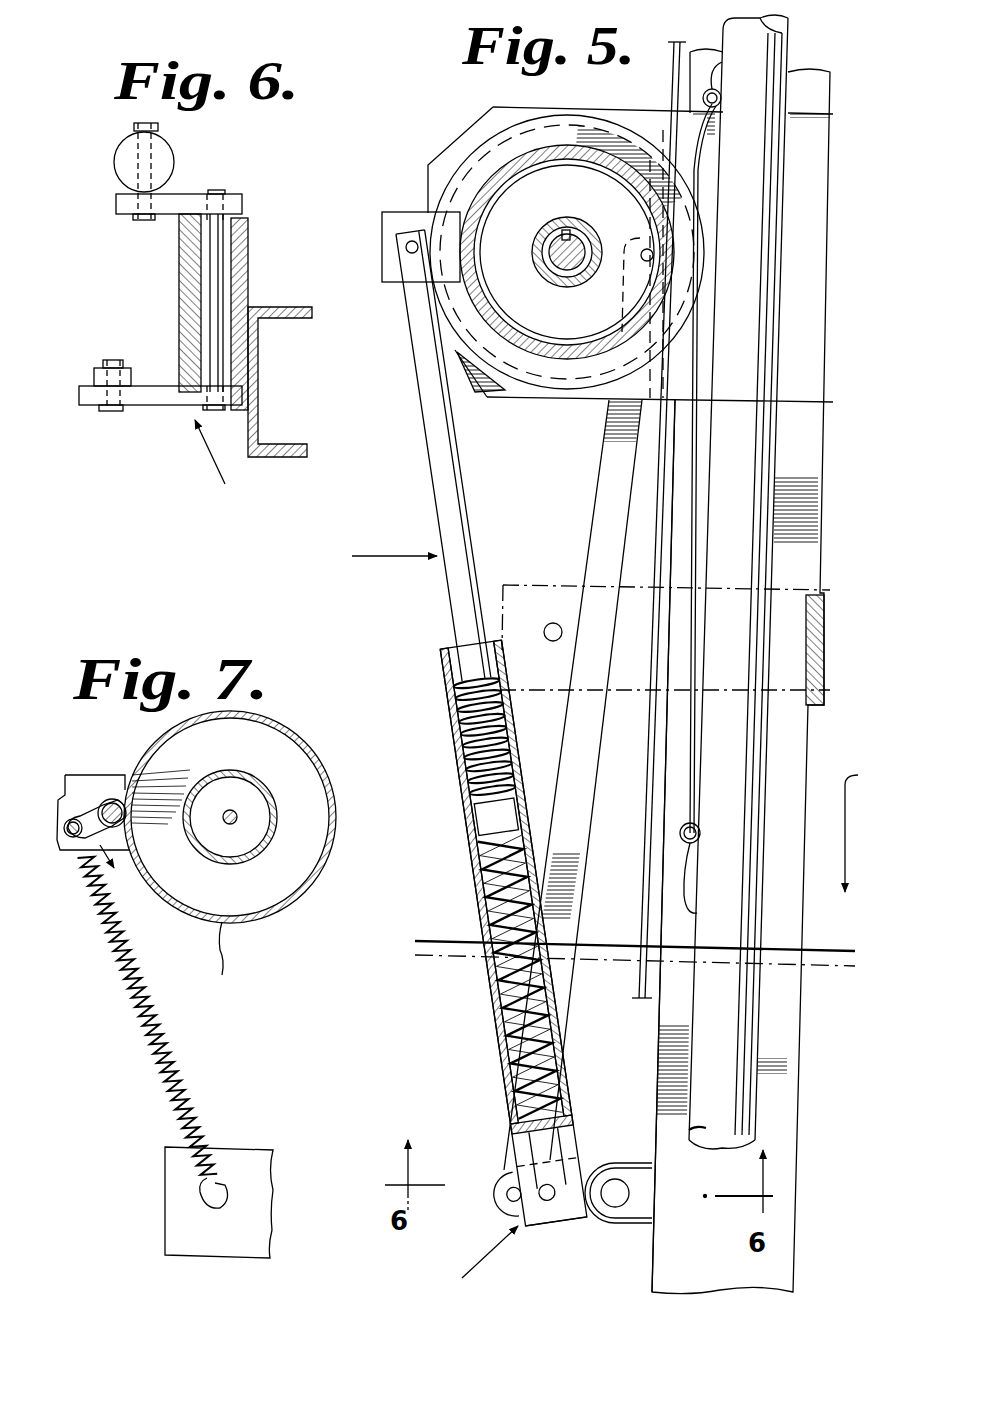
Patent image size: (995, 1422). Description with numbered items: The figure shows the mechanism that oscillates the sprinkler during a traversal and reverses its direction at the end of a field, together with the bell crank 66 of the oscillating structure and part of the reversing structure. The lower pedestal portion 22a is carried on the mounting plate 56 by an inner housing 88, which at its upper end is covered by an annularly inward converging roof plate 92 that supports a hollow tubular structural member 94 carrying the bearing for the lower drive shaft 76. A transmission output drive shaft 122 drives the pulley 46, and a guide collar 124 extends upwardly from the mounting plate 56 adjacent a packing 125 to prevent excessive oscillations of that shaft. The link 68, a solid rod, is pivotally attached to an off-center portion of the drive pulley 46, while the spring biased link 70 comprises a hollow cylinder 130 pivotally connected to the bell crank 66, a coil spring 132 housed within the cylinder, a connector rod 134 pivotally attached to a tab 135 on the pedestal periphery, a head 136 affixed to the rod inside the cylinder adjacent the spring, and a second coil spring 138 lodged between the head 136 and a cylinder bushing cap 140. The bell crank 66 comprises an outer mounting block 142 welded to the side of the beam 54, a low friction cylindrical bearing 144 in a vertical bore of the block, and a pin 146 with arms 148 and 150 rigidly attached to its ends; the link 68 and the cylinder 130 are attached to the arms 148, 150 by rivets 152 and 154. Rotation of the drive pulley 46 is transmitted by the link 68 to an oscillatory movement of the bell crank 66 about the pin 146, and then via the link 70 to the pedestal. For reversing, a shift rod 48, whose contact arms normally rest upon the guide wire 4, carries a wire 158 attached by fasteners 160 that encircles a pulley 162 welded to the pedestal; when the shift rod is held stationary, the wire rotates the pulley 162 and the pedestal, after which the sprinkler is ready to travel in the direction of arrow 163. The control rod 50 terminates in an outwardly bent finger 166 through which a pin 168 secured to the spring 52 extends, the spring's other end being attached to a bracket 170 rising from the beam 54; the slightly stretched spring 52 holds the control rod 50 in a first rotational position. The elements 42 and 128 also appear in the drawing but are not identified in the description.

In FIG. 5, the guide wire 4 is at (672, 58).
In FIG. 5, the lower pedestal portion 22a is at (482, 195).
In FIG. 7, the lower pedestal portion 22a is at (216, 960).
In FIG. 7, the drum 42 is at (192, 876).
In FIG. 5, the drive pulley 46 is at (568, 150).
In FIG. 5, the shift rod 48 is at (752, 553).
In FIG. 7, the control rod 50 is at (111, 800).
In FIG. 7, the spring 52 is at (160, 1090).
In FIG. 5, the beam 54 is at (782, 1100).
In FIG. 6, the beam 54 is at (277, 307).
In FIG. 5, the mounting plate 56 is at (492, 398).
In FIG. 5, the bell crank 66 is at (476, 1262).
In FIG. 6, the bell crank 66 is at (210, 463).
In FIG. 5, the link 68 is at (578, 796).
In FIG. 6, the link 68 is at (94, 376).
In FIG. 5, the spring biased link 70 is at (378, 556).
In FIG. 7, the lower drive shaft 76 is at (233, 810).
In FIG. 5, the inner housing 88 is at (564, 166).
In FIG. 7, the roof plate 92 is at (297, 783).
In FIG. 7, the hollow tubular structural member 94 is at (250, 862).
In FIG. 5, the transmission output drive shaft 122 is at (545, 235).
In FIG. 5, the guide collar 124 is at (552, 270).
In FIG. 5, the packing 125 is at (568, 276).
In FIG. 5, the pivot pin 128 is at (408, 255).
In FIG. 5, the hollow cylinder 130 is at (461, 940).
In FIG. 6, the hollow cylinder 130 is at (171, 162).
In FIG. 5, the coil spring 132 is at (481, 982).
In FIG. 5, the connector rod 134 is at (438, 715).
In FIG. 5, the tab 135 is at (393, 225).
In FIG. 7, the tab 135 is at (128, 790).
In FIG. 5, the head 136 is at (454, 820).
In FIG. 5, the second coil spring 138 is at (446, 742).
In FIG. 5, the cylinder bushing cap 140 is at (432, 629).
In FIG. 5, the outer mounting block 142 is at (655, 1160).
In FIG. 6, the outer mounting block 142 is at (243, 238).
In FIG. 6, the low friction cylindrical bearing 144 is at (195, 264).
In FIG. 5, the pin 146 is at (625, 1198).
In FIG. 6, the pin 146 is at (214, 312).
In FIG. 5, the arm 148 is at (471, 1165).
In FIG. 6, the arm 148 is at (155, 396).
In FIG. 5, the arm 150 is at (600, 1210).
In FIG. 6, the arm 150 is at (120, 207).
In FIG. 5, the rivet 152 is at (508, 1197).
In FIG. 6, the rivet 152 is at (108, 411).
In FIG. 5, the rivet 154 is at (572, 1153).
In FIG. 6, the rivet 154 is at (133, 123).
In FIG. 5, the wire 158 is at (712, 158).
In FIG. 5, the fasteners 160 is at (722, 86).
In FIG. 5, the pulley 162 is at (690, 256).
In FIG. 5, the arrow 163 is at (868, 823).
In FIG. 7, the outwardly bent finger 166 is at (74, 838).
In FIG. 7, the pin 168 is at (70, 790).
In FIG. 5, the bracket 170 is at (553, 585).
In FIG. 7, the bracket 170 is at (190, 1238).